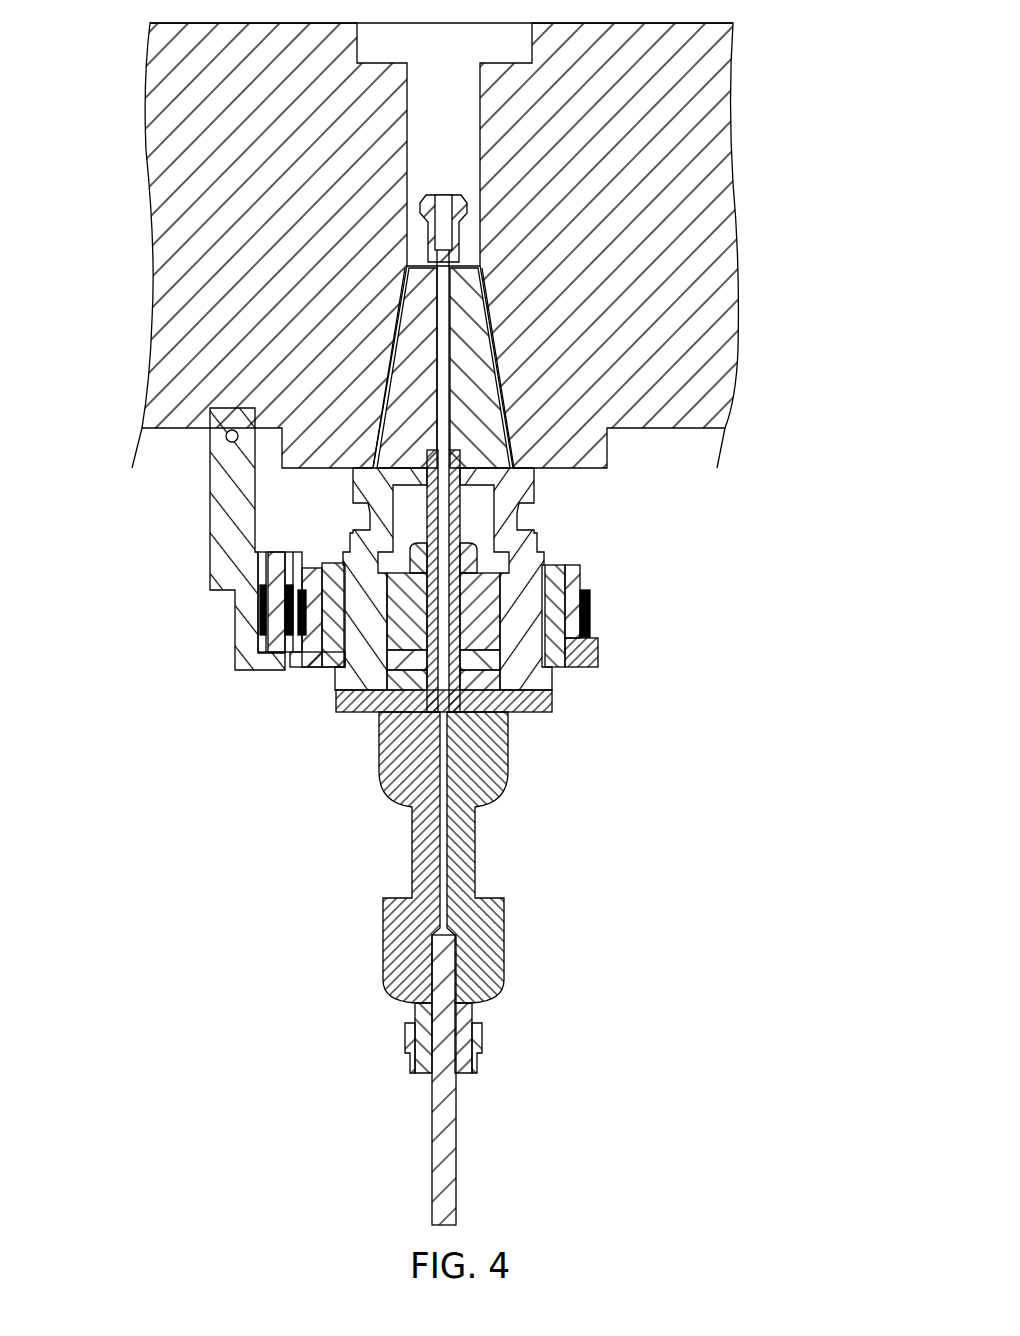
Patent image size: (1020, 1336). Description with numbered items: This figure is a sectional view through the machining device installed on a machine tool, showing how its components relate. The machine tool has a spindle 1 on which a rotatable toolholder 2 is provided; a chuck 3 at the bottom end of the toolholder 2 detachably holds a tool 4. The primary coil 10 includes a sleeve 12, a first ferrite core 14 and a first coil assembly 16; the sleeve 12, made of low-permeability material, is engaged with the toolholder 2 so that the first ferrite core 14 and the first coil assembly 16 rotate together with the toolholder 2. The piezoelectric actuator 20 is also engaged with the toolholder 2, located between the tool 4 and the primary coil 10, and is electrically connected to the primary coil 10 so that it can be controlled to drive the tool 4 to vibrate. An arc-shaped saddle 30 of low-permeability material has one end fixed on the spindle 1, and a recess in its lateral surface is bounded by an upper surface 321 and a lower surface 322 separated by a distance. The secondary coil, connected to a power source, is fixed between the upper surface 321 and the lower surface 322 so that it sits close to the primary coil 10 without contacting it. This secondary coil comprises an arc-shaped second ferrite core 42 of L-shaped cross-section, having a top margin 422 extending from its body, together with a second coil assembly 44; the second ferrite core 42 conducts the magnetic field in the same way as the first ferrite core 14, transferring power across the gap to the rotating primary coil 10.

The spindle 1 is at (627, 415).
The toolholder 2 is at (495, 470).
The chuck 3 is at (460, 1053).
The tool 4 is at (447, 1143).
The primary coil 10 is at (463, 740).
The sleeve 12 is at (572, 662).
The first ferrite core 14 is at (578, 575).
The first coil assembly 16 is at (590, 630).
The piezoelectric actuator 20 is at (492, 687).
The saddle 30 is at (217, 492).
The second ferrite core 42 is at (275, 652).
The second coil assembly 44 is at (262, 617).
The upper surface 321 is at (257, 573).
The lower surface 322 is at (283, 657).
The top margin 422 is at (285, 577).